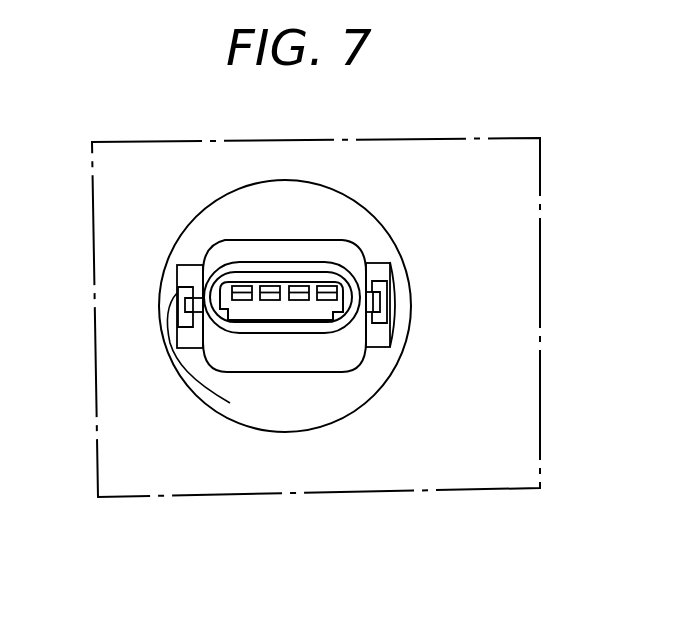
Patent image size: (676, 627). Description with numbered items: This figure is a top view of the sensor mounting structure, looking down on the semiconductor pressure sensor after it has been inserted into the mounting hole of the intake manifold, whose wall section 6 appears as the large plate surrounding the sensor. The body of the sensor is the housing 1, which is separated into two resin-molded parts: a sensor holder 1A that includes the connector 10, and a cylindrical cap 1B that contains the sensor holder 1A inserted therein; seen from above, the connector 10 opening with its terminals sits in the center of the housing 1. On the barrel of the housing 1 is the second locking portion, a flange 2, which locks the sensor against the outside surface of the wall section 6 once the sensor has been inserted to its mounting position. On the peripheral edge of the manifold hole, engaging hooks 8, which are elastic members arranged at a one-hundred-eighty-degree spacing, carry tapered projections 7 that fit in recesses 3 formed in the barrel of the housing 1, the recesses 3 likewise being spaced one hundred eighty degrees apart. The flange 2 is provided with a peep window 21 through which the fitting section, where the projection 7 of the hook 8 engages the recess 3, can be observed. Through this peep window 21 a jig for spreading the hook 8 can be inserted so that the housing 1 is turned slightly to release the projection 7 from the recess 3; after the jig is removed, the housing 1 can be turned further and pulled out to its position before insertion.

The housing 1 is at (320, 372).
The sensor holder 1A is at (297, 264).
The cap 1B is at (337, 366).
The connector 10 is at (281, 301).
The second locking portion 2 is at (372, 232).
The peep window 21 is at (388, 265).
The recess 3 is at (372, 323).
The intake manifold (wall section) 6 is at (157, 468).
The tapered projection 7 is at (373, 292).
The engaging hook 8 is at (374, 311).